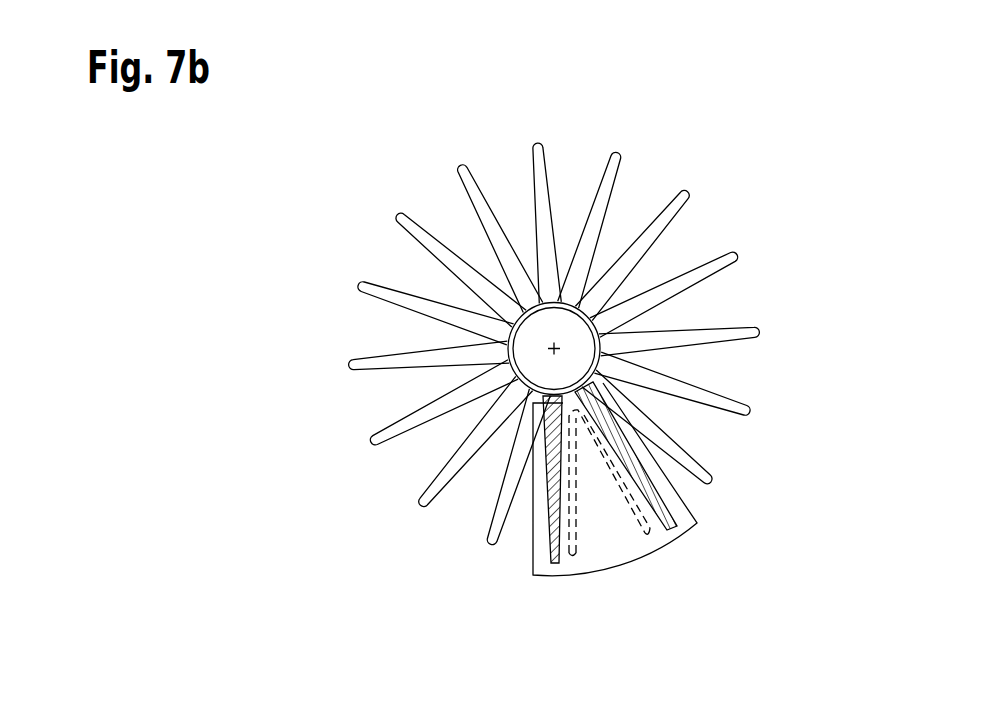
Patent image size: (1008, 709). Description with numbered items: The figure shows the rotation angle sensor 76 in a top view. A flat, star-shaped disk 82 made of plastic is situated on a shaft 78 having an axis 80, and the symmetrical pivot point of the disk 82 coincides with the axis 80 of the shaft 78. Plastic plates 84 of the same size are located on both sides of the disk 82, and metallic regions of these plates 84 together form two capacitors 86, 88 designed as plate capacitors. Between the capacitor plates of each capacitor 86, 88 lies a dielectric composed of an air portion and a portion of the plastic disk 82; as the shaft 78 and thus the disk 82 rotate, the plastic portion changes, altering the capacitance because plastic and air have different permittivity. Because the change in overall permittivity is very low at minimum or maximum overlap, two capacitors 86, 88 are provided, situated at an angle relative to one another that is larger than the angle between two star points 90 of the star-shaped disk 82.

The rotation angle sensor 76 is at (733, 209).
The shaft 78 is at (580, 354).
The axis 80 is at (552, 348).
The star-shaped disk 82 is at (581, 136).
The plates 84 is at (630, 550).
The capacitor 86 is at (557, 565).
The capacitor 88 is at (676, 524).
The star points 90 is at (620, 154).